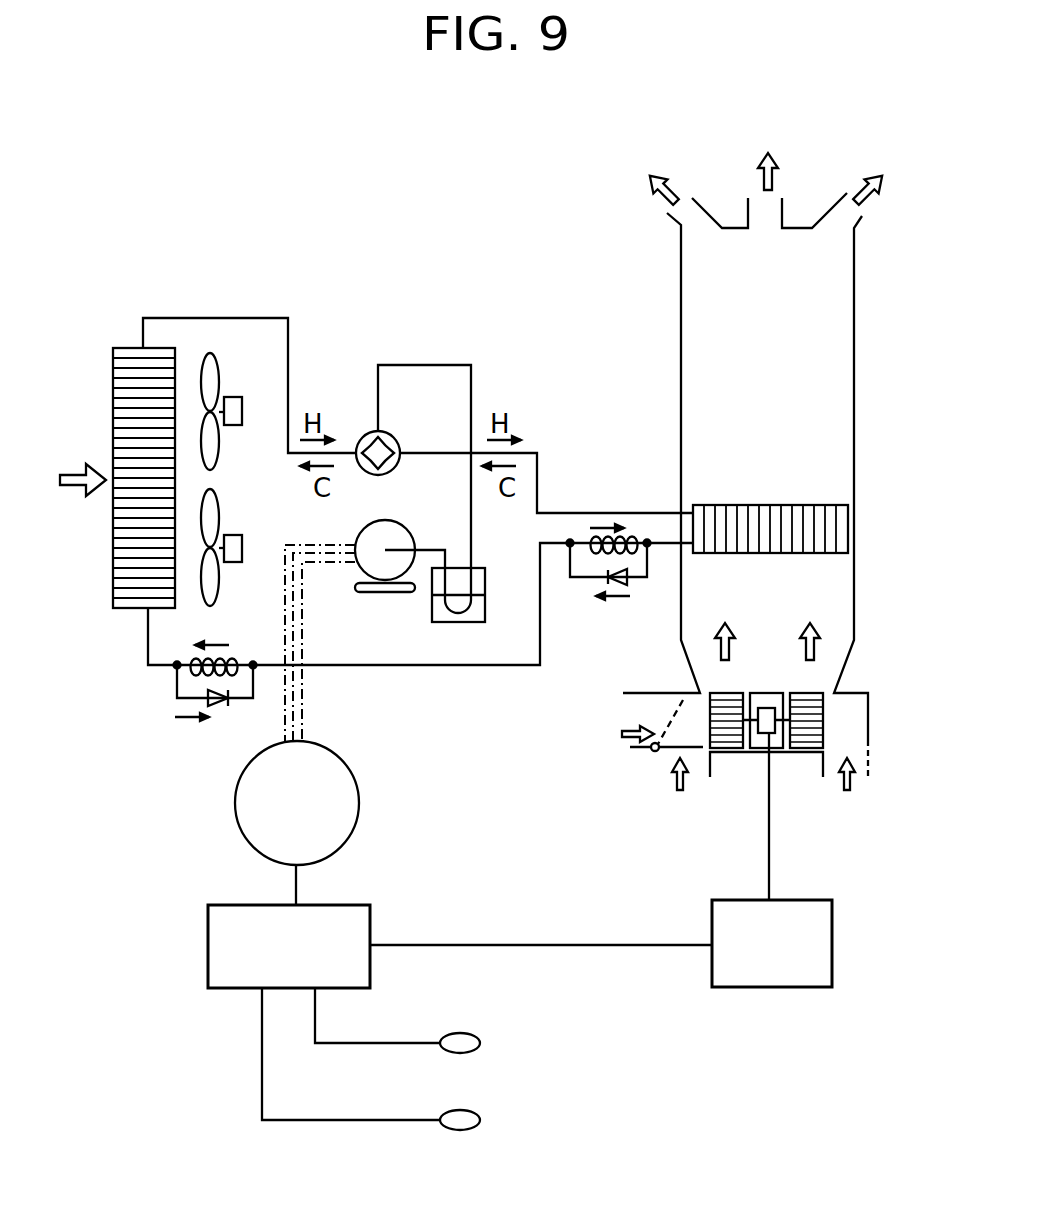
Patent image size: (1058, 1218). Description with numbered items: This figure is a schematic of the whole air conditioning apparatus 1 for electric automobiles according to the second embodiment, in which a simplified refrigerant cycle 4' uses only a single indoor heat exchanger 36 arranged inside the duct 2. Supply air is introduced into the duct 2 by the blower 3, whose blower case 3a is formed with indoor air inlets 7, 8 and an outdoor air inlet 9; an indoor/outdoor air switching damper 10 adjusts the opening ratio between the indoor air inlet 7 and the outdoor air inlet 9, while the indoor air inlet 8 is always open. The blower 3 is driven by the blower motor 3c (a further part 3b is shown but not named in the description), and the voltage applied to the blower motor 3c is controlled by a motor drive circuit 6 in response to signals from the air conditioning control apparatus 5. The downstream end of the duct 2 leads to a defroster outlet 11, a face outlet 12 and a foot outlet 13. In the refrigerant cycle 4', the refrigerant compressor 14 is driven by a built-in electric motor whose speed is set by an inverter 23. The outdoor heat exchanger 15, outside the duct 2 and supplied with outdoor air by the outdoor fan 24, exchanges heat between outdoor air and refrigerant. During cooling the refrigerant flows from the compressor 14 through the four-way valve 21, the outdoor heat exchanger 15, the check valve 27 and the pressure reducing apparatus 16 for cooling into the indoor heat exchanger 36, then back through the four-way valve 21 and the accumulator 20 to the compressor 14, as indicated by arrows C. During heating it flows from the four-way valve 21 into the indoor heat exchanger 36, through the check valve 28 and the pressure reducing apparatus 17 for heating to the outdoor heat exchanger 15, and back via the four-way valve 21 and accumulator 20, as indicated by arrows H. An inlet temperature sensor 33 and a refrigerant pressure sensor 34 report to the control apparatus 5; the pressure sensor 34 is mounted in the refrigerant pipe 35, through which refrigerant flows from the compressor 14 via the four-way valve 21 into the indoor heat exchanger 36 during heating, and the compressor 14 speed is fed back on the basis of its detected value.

The air conditioning apparatus 1 is at (502, 255).
The duct 2 is at (855, 278).
The blower 3 is at (818, 777).
The blower case 3a is at (800, 752).
The fan rotor 3b is at (823, 720).
The blower motor 3c is at (770, 700).
The refrigerant cycle 4' is at (338, 295).
The air conditioning control apparatus 5 is at (373, 916).
The motor drive circuit 6 is at (838, 933).
The indoor air inlet 7 is at (652, 765).
The indoor air inlet 8 is at (833, 768).
The outdoor air inlet 9 is at (640, 712).
The indoor/outdoor air switching damper 10 is at (698, 752).
The defroster outlet 11 is at (688, 197).
The face outlet 12 is at (773, 206).
The foot outlet 13 is at (868, 213).
The refrigerant compressor 14 is at (392, 594).
The outdoor heat exchanger 15 is at (128, 348).
The pressure reducing apparatus for cooling 16 is at (598, 548).
The pressure reducing apparatus for heating 17 is at (240, 660).
The accumulator 20 is at (470, 625).
The four-way valve 21 is at (362, 438).
The inverter 23 is at (355, 835).
The outdoor fan 24 is at (212, 352).
The check valve 27 is at (220, 705).
The check valve 28 is at (628, 583).
The inlet temperature sensor 33 is at (486, 1042).
The refrigerant pressure sensor 34 is at (486, 1118).
The refrigerant pipe 35 is at (555, 513).
The indoor heat exchanger 36 is at (820, 503).